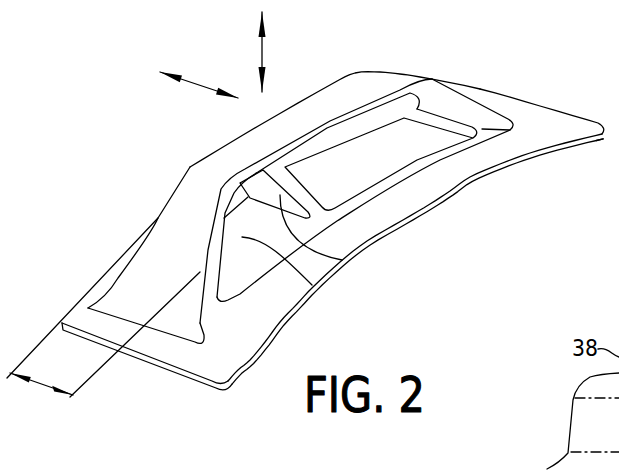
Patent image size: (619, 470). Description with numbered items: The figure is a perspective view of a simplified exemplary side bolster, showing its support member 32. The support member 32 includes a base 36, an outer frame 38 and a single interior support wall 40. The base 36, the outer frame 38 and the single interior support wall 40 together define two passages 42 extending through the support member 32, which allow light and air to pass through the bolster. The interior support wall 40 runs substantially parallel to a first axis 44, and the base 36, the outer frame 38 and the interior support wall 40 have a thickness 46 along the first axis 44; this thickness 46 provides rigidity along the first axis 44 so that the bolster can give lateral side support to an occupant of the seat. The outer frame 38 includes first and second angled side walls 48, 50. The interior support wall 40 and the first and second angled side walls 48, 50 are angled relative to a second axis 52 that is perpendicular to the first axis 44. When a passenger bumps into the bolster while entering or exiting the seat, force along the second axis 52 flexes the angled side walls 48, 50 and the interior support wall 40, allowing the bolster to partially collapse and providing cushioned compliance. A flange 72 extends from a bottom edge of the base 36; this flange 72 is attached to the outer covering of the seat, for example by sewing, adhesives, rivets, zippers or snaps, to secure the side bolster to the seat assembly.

The support member 32 is at (178, 164).
The base 36 is at (533, 122).
The outer frame 38 is at (344, 92).
The interior support wall 40 is at (342, 260).
The passage 42 is at (377, 153).
The first axis 44 is at (200, 82).
The thickness 46 is at (75, 396).
The first angled side wall 48 is at (173, 251).
The second angled side wall 50 is at (440, 98).
The second axis 52 is at (262, 52).
The flange 72 is at (498, 153).